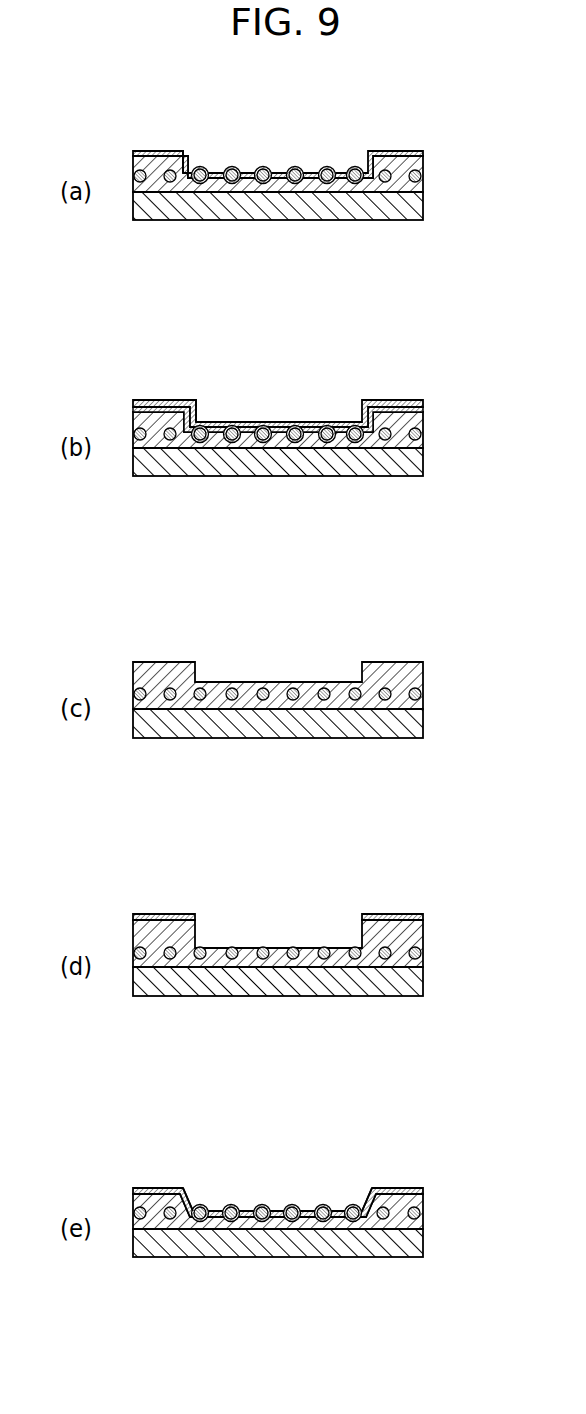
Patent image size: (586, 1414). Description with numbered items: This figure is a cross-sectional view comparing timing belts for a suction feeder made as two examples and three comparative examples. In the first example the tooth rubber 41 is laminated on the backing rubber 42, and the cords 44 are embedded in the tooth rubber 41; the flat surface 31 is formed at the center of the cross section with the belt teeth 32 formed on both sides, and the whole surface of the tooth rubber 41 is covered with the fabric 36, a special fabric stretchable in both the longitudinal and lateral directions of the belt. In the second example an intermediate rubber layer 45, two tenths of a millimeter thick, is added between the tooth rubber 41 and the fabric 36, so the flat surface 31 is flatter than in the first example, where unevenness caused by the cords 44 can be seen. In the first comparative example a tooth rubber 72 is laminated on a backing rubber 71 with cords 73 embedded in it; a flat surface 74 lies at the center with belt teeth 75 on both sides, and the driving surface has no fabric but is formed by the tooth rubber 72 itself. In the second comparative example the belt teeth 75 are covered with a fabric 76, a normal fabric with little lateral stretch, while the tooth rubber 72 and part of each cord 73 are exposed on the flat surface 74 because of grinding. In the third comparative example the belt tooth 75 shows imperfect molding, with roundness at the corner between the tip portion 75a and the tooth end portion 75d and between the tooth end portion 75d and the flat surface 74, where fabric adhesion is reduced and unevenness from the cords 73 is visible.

The flat surface 31 is at (272, 170).
The belt teeth 32 is at (400, 165).
The fabric 36 is at (375, 152).
The tooth rubber 41 is at (313, 280).
The backing rubber 42 is at (418, 207).
The cords 44 is at (168, 170).
The intermediate rubber layer 45 is at (341, 422).
The backing rubber 71 is at (414, 723).
The tooth rubber 72 is at (304, 927).
The cords 73 is at (230, 686).
The flat surface 74 is at (265, 682).
The belt teeth 75 is at (397, 685).
The tip portion 75a is at (150, 1188).
The tooth end portion 75d is at (190, 1201).
The fabric 76 is at (383, 917).